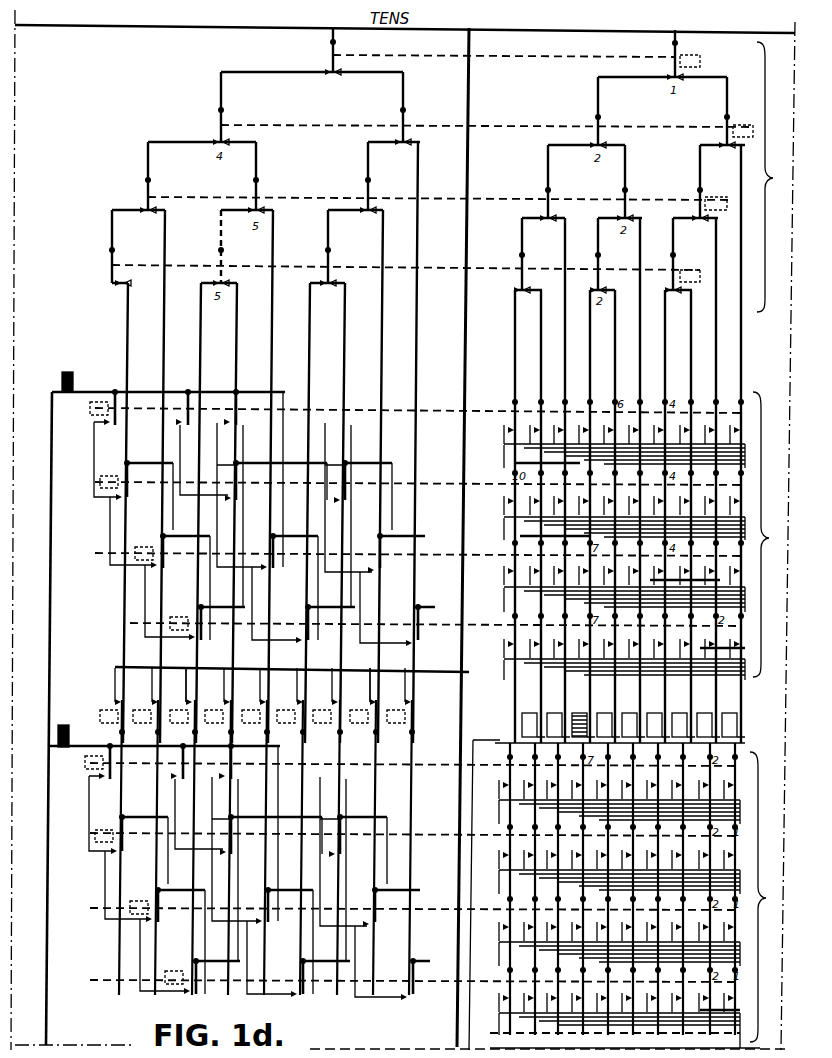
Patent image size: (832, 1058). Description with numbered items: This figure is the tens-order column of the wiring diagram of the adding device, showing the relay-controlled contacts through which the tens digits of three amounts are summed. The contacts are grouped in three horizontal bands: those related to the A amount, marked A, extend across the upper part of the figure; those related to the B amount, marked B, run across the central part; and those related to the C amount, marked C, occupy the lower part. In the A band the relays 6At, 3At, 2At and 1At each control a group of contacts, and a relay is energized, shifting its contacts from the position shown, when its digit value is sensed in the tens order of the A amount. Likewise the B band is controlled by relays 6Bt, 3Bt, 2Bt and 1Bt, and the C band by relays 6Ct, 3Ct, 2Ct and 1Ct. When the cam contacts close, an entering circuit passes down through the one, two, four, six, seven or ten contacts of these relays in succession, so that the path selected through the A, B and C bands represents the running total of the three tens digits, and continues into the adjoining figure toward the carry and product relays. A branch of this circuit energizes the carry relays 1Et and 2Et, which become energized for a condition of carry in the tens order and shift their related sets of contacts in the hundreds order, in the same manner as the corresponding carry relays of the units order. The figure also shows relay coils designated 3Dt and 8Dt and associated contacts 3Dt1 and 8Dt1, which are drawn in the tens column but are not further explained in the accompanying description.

The relay 6At is at (700, 58).
The relay 3At is at (745, 124).
The relay 2At is at (716, 196).
The relay 1At is at (690, 269).
The A amount contacts A is at (771, 177).
The B amount contacts B is at (643, 536).
The C amount contacts C is at (633, 895).
The relay 1Et is at (67, 372).
The relay 2Et is at (64, 725).
The relay 6Bt is at (92, 412).
The relay 3Bt is at (100, 485).
The relay 2Bt is at (135, 557).
The relay 1Bt is at (170, 633).
The relay 6Ct is at (87, 766).
The relay 3Ct is at (95, 839).
The relay 2Ct is at (138, 908).
The relay 1Ct is at (170, 982).
The relay 3Dt is at (579, 713).
The relay 8Dt is at (705, 713).
The relay contact 3Dt1 is at (195, 700).
The relay contact 8Dt1 is at (377, 702).